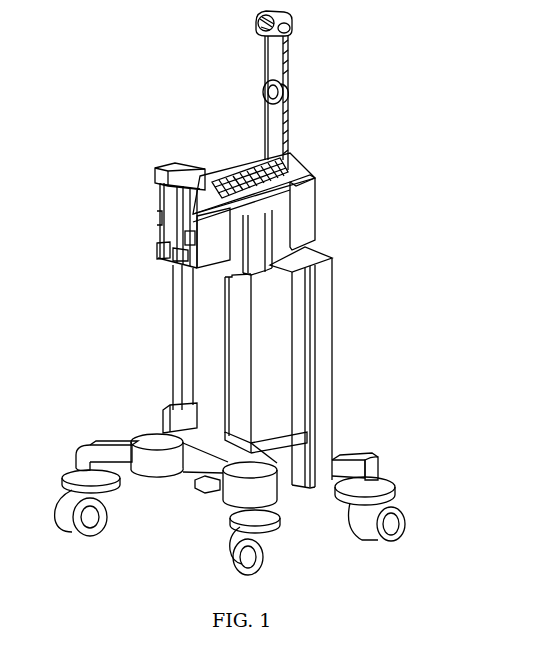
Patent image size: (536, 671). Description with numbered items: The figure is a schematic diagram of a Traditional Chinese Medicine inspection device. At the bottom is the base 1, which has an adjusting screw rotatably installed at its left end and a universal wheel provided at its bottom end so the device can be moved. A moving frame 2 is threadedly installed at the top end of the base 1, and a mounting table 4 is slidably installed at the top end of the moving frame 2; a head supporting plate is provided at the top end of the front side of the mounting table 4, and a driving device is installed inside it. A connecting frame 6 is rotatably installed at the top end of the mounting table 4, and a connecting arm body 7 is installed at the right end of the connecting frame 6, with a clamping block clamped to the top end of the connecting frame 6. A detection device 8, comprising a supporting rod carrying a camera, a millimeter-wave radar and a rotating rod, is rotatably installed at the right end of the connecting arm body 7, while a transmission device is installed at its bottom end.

The base 1 is at (332, 365).
The moving frame 2 is at (192, 348).
The mounting table 4 is at (160, 248).
The connecting frame 6 is at (200, 170).
The connecting arm body 7 is at (290, 174).
The detection device 8 is at (288, 67).